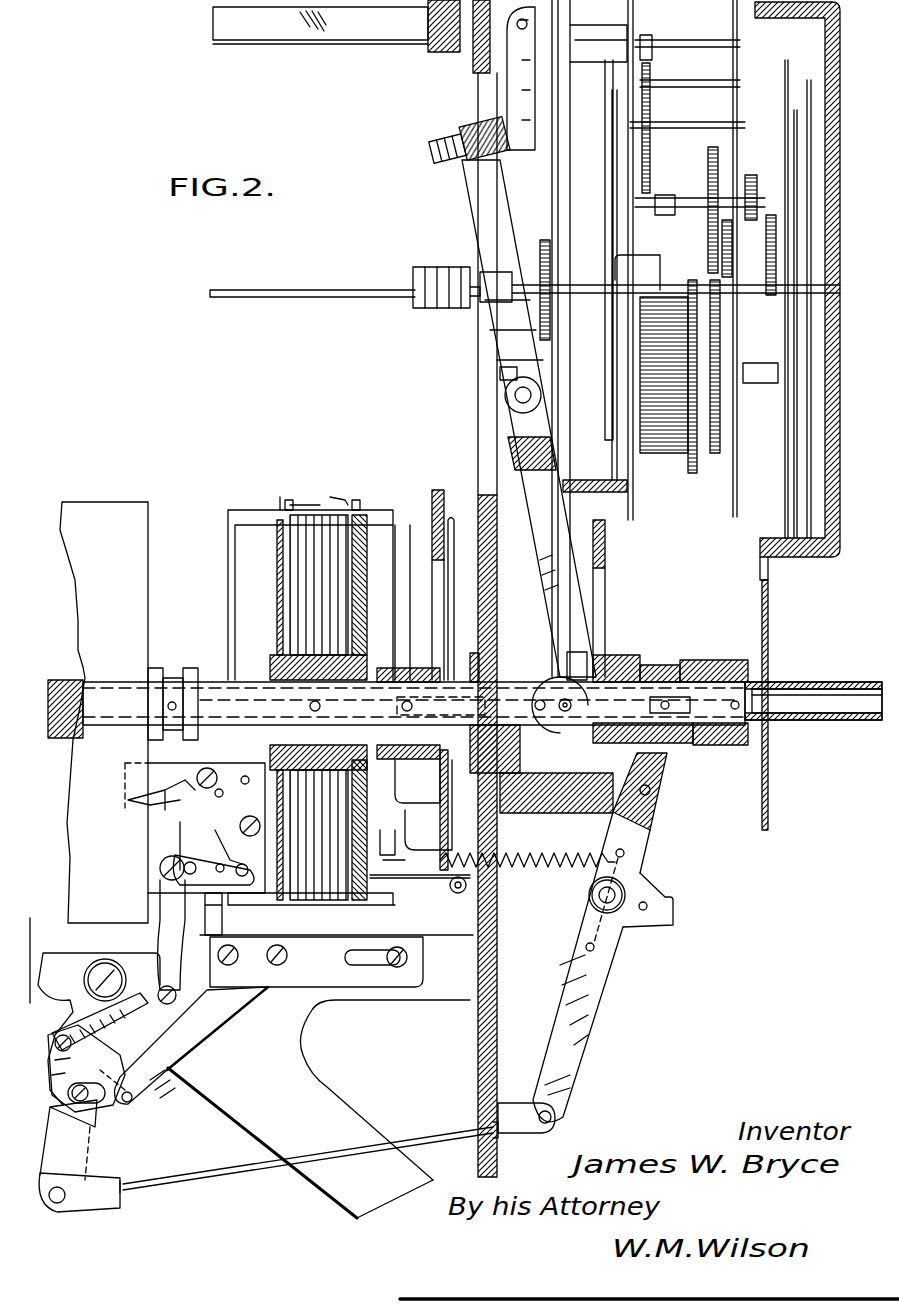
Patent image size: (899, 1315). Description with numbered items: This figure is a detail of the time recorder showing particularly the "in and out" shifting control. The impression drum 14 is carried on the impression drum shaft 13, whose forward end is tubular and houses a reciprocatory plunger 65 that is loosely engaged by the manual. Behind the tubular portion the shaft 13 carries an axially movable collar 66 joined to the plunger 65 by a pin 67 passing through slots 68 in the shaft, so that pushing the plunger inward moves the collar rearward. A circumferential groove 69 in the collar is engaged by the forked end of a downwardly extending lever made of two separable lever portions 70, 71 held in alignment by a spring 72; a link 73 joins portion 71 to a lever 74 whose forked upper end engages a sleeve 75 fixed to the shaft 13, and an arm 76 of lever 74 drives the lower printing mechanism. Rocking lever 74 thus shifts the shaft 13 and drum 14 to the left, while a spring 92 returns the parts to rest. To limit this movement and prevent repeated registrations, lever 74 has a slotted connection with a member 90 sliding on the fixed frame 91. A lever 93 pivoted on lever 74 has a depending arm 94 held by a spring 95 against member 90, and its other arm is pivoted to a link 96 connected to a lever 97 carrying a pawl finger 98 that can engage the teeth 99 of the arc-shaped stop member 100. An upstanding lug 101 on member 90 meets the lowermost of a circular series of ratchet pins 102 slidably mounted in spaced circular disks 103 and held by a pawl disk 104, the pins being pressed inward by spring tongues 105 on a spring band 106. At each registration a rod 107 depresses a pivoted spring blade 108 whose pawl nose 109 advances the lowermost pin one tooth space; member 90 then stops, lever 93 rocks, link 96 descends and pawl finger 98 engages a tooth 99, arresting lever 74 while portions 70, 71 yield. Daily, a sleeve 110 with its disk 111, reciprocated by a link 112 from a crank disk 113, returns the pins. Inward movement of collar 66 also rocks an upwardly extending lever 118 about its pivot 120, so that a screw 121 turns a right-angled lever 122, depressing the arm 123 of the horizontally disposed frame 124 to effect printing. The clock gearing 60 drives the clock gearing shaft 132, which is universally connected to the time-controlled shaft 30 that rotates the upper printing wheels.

The impression drum shaft 13 is at (848, 722).
The impression drum 14 is at (118, 507).
The time-controlled shaft 30 is at (282, 296).
The clock gearing 60 is at (730, 228).
The reciprocatory plunger 65 is at (795, 695).
The axially movable collar 66 is at (628, 660).
The pin 67 is at (740, 735).
The slots 68 is at (705, 730).
The circumferential groove 69 is at (700, 665).
The lever portion 70 is at (637, 840).
The lever portion 71 is at (592, 1000).
The spring 72 is at (632, 886).
The link 73 is at (250, 1172).
The lever 74 is at (70, 1157).
The sleeve 75 is at (170, 683).
The arm 76 is at (52, 958).
The member 90 is at (212, 1012).
The fixed frame 91 is at (312, 1020).
The spring 92 is at (545, 870).
The lever 93 is at (108, 1028).
The depending arm 94 is at (76, 1060).
The spring 95 is at (140, 1085).
The link 96 is at (178, 925).
The lever 97 is at (162, 872).
The pawl finger 98 is at (225, 848).
The teeth 99 is at (150, 790).
The arc-shaped stop member 100 is at (195, 828).
The upstanding lug 101 is at (213, 905).
The ratchet pins 102 is at (258, 520).
The circular disks 103 is at (278, 553).
The pawl disk 104 is at (368, 780).
The spring tongues 105 is at (338, 505).
The spring band 106 is at (305, 508).
The rod 107 is at (413, 803).
The pivoted spring blade 108 is at (420, 885).
The pawl nose 109 is at (383, 880).
The sleeve 110 is at (400, 670).
The disk 111 is at (445, 490).
The link 112 is at (498, 697).
The crank disk 113 is at (563, 720).
The upwardly extending lever 118 is at (550, 583).
The pivot 120 is at (514, 397).
The screw 121 is at (437, 145).
The right-angled lever 122 is at (520, 60).
The arm 123 is at (430, 45).
The horizontally disposed frame 124 is at (330, 30).
The clock gearing shaft 132 is at (655, 290).